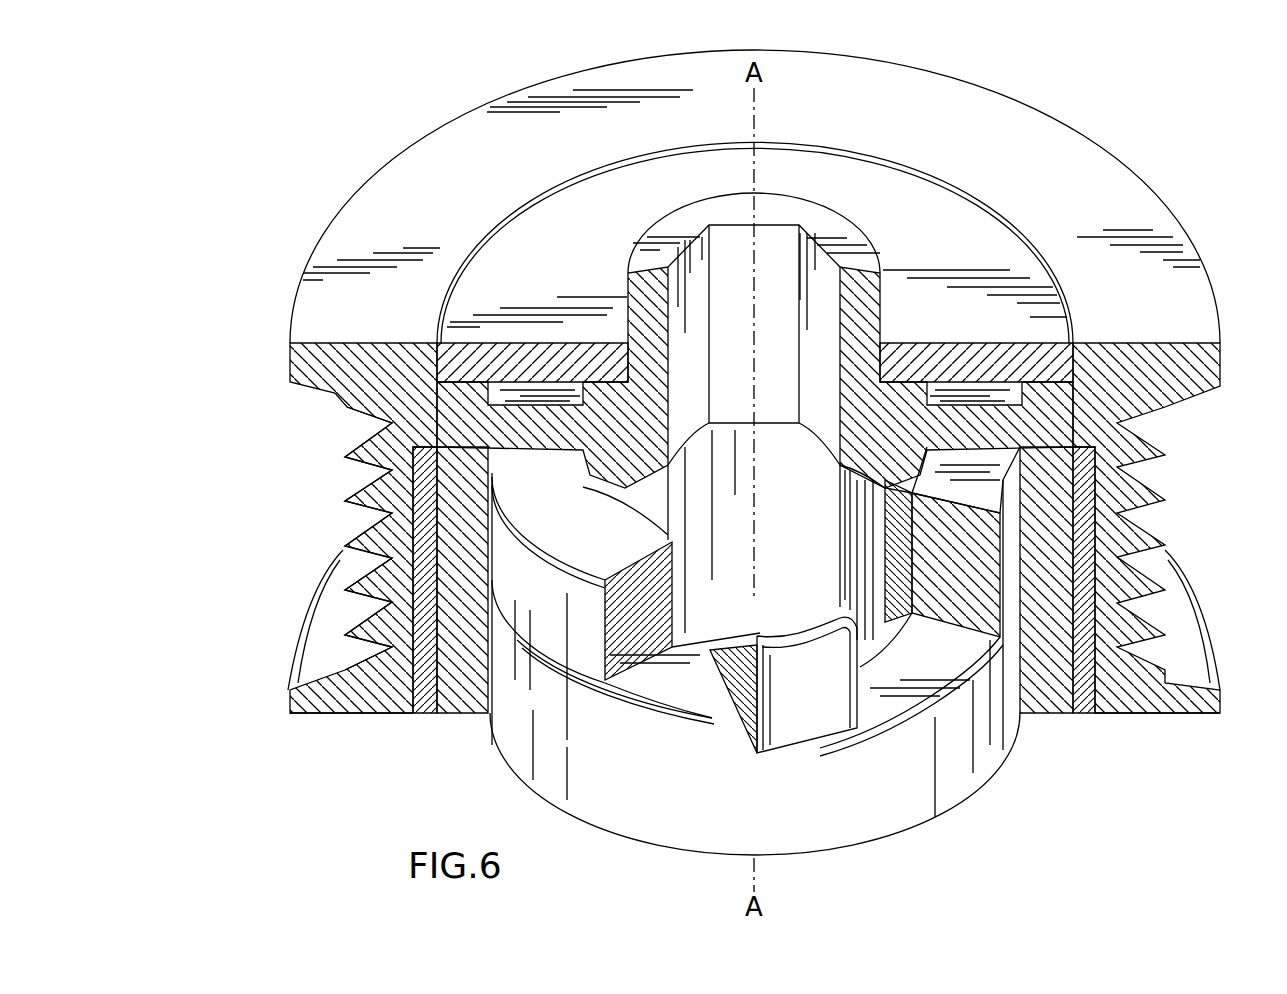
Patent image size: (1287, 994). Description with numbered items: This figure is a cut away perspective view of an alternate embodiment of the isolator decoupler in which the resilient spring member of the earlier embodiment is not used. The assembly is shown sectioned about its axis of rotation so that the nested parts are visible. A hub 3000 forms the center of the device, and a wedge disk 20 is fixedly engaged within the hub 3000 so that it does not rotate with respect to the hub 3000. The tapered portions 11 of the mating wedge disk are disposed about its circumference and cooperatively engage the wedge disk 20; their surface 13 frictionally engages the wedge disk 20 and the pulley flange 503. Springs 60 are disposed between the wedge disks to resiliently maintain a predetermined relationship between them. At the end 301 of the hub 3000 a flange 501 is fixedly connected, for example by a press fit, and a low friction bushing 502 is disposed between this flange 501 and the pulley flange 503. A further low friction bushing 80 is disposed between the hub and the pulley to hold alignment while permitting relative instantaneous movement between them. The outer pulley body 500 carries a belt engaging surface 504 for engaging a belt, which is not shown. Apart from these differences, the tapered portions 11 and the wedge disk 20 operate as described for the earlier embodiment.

The cap 500 is at (1160, 197).
The flange 501 is at (943, 245).
The low friction bushing 502 is at (1073, 393).
The pulley flange 503 is at (1165, 424).
The belt engaging surface 504 is at (347, 497).
The end of hub 301 is at (823, 222).
The low friction bushing 80 is at (1087, 551).
The surface 13 is at (547, 497).
The tapered portion 11 is at (567, 633).
The wedge disk 20 is at (960, 770).
The hub 3000 is at (1043, 705).
The spring 60 is at (822, 717).